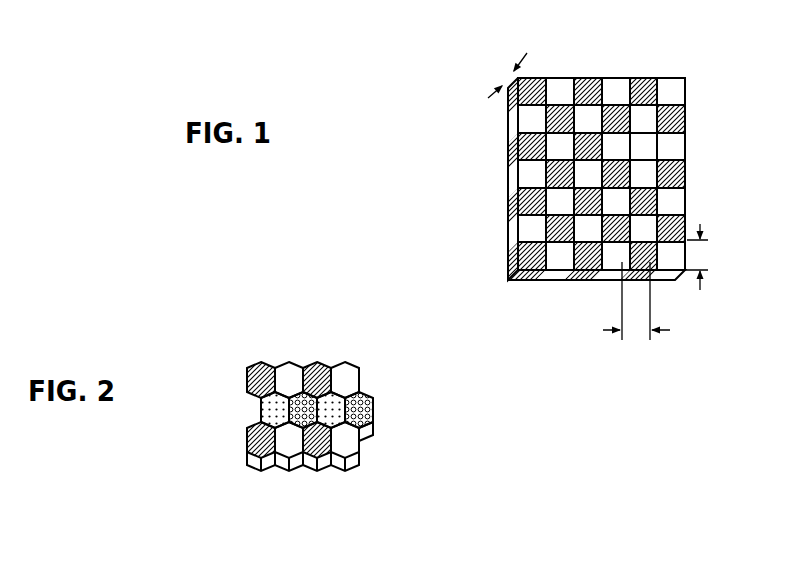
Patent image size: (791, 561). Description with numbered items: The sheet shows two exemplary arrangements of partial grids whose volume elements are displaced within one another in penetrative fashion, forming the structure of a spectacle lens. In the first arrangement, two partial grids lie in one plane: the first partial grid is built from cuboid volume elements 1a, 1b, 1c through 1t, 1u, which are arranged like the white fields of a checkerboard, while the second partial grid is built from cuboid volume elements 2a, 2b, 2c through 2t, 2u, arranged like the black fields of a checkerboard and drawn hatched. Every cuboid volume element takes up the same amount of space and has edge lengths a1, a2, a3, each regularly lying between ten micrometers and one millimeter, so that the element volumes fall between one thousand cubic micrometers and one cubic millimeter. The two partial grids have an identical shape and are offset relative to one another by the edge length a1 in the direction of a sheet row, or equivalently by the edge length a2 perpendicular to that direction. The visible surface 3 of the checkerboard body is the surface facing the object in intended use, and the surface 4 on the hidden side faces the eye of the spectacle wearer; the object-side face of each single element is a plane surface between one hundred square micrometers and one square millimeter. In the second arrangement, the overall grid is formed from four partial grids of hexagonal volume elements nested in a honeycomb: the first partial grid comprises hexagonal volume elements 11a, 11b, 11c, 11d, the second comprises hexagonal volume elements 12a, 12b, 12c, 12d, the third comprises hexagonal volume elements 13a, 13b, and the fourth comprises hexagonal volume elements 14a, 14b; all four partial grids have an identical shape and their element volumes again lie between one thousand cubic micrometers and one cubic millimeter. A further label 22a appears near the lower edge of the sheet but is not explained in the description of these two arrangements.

In FIG. 1, the cuboid volume element 1a is at (560, 80).
In FIG. 1, the cuboid volume element 1b is at (616, 80).
In FIG. 1, the cuboid volume element 1c is at (672, 80).
In FIG. 1, the cuboid volume element 1t is at (608, 271).
In FIG. 1, the cuboid volume element 1u is at (670, 271).
In FIG. 1, the cuboid volume element 2a is at (513, 103).
In FIG. 1, the cuboid volume element 2b is at (588, 80).
In FIG. 1, the cuboid volume element 2c is at (644, 80).
In FIG. 1, the cuboid volume element 2t is at (584, 271).
In FIG. 1, the cuboid volume element 2u is at (656, 273).
In FIG. 1, the surface 3 is at (646, 163).
In FIG. 1, the surface 4 is at (541, 285).
In FIG. 1, the edge length a1 is at (701, 257).
In FIG. 1, the edge length a2 is at (636, 306).
In FIG. 1, the edge length a3 is at (501, 71).
In FIG. 2, the hexagonal volume element 11a is at (258, 363).
In FIG. 2, the hexagonal volume element 11b is at (315, 363).
In FIG. 2, the hexagonal volume element 11c is at (250, 473).
In FIG. 2, the hexagonal volume element 11d is at (317, 473).
In FIG. 2, the hexagonal volume element 12a is at (287, 363).
In FIG. 2, the hexagonal volume element 12b is at (345, 363).
In FIG. 2, the hexagonal volume element 12c is at (293, 472).
In FIG. 2, the hexagonal volume element 12d is at (350, 472).
In FIG. 2, the hexagonal volume element 13a is at (263, 410).
In FIG. 2, the hexagonal volume element 13b is at (372, 400).
In FIG. 2, the hexagonal volume element 14a is at (247, 447).
In FIG. 2, the hexagonal volume element 14b is at (372, 440).
In FIG. 2, the stray label 22a is at (522, 544).